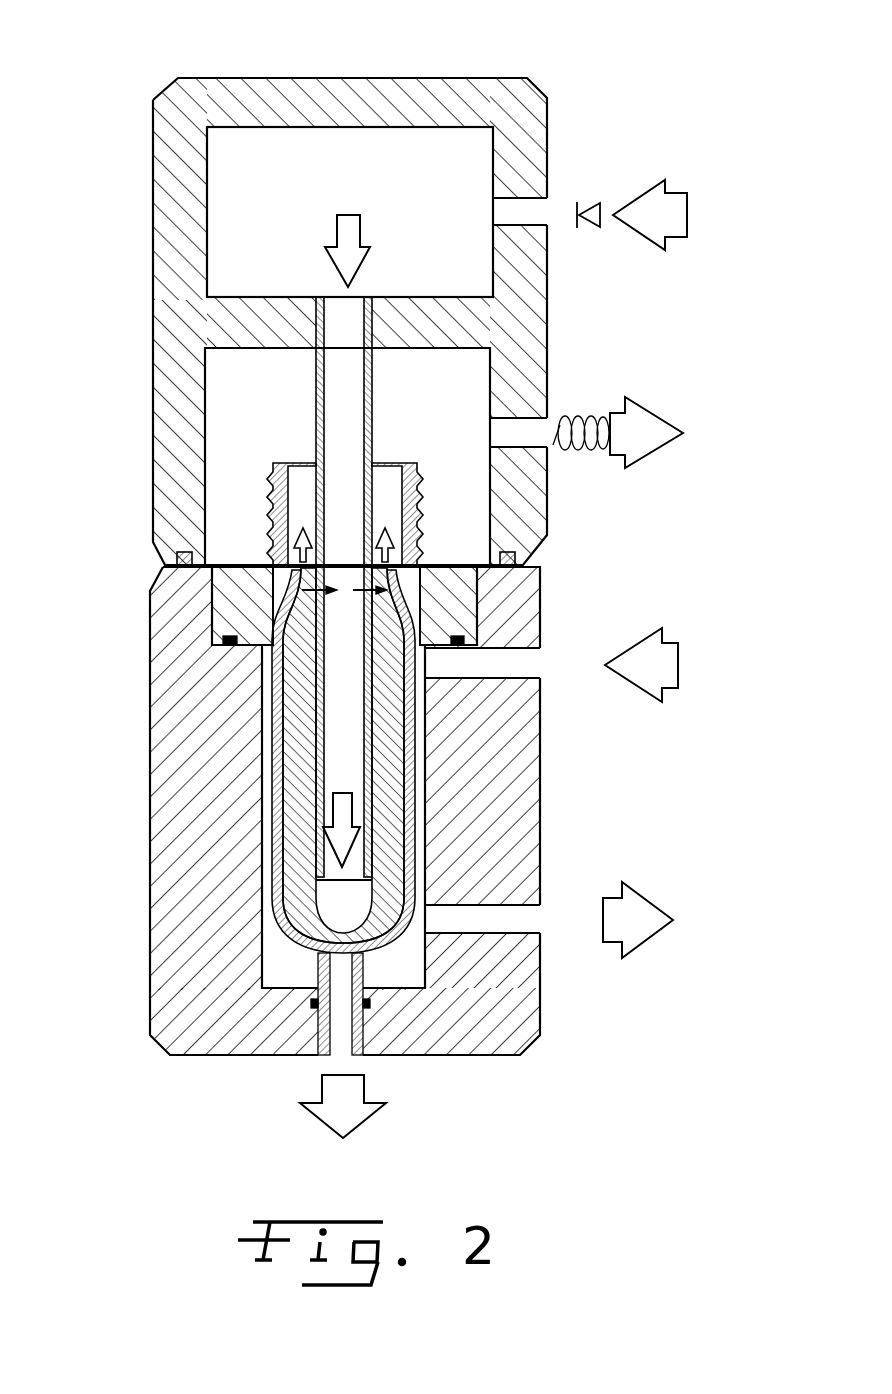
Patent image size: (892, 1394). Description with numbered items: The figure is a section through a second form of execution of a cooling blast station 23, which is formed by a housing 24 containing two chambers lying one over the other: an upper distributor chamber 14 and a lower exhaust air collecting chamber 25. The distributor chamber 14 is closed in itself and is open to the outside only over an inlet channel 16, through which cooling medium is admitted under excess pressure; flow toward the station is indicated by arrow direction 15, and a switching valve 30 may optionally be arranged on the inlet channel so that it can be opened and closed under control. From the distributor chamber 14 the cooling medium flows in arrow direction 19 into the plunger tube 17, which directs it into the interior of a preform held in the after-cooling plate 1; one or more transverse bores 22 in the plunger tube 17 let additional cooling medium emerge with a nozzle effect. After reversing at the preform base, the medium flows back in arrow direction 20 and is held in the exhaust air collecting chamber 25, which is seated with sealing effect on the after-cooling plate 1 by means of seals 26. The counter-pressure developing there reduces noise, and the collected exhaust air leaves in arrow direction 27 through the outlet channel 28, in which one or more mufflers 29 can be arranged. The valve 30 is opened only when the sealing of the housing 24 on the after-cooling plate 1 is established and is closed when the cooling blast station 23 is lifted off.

The after-cooling plate 1 is at (533, 795).
The distributor chamber 14 is at (433, 150).
The arrow direction 15 is at (687, 215).
The inlet channel 16 is at (540, 208).
The plunger tube 17 is at (372, 393).
The arrow direction 19 is at (335, 222).
The arrow direction 20 is at (302, 555).
The transverse bore 22 is at (300, 648).
The cooling blast station 23 is at (675, 85).
The housing 24 is at (160, 214).
The exhaust air collecting chamber 25 is at (231, 396).
The seal 26 is at (517, 562).
The arrow direction 27 is at (668, 420).
The outlet channel 28 is at (538, 432).
The muffler 29 is at (584, 445).
The switching valve 30 is at (586, 222).